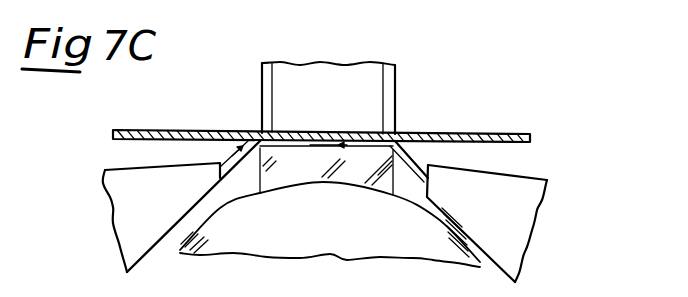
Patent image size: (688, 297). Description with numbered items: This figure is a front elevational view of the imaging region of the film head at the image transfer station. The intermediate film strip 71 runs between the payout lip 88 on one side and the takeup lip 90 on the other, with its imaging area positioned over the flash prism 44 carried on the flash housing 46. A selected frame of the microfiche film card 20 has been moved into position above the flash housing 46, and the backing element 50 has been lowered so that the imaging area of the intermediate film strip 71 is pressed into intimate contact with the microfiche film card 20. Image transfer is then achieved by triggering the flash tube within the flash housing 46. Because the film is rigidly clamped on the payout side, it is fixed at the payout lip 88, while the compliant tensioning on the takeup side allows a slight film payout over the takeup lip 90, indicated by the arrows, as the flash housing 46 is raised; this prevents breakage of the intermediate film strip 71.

The microfiche film card 20 is at (478, 134).
The backing element 50 is at (397, 87).
The intermediate film strip 71 is at (418, 157).
The flash prism 44 is at (308, 176).
The takeup lip 90 is at (205, 204).
The payout lip 88 is at (435, 200).
The flash housing 46 is at (186, 238).